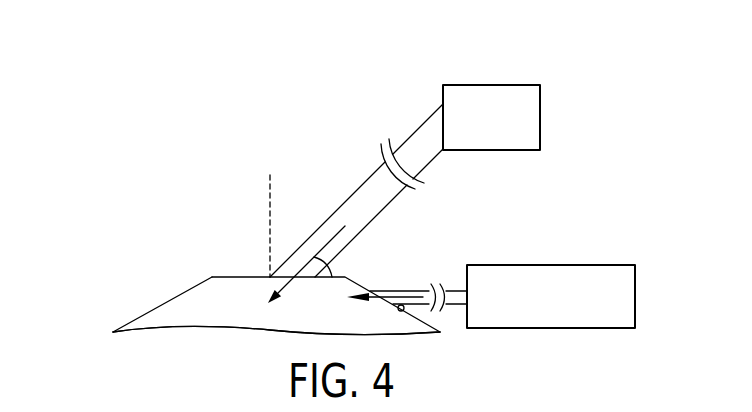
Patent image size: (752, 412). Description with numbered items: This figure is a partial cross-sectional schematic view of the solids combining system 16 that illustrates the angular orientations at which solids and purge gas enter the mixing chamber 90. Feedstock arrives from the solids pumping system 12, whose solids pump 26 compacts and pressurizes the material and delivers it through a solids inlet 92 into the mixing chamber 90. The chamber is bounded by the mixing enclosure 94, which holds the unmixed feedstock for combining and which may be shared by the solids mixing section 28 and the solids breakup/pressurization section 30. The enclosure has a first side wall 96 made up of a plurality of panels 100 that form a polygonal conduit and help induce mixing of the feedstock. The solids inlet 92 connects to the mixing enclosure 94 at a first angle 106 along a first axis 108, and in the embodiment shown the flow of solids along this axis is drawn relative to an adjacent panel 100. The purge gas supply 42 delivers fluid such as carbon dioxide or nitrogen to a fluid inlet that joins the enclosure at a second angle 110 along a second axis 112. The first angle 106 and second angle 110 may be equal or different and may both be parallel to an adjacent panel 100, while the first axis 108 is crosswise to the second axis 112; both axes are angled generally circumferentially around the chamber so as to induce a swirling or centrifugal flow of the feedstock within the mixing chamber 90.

The solids pumping system 12 is at (569, 109).
The solids combining system 16 is at (120, 182).
The solids pump 26 is at (492, 85).
The solids mixing section 28 is at (126, 279).
The solids breakup/pressurization section 30 is at (265, 303).
The purge gas supply 42 is at (552, 265).
The mixing chamber 90 is at (256, 316).
The solids inlet 92 is at (270, 253).
The mixing enclosure 94 is at (172, 299).
The first side wall 96 is at (173, 302).
The panel 100 is at (125, 327).
The first angle 106 is at (334, 275).
The first axis 108 is at (328, 240).
The second angle 110 is at (398, 309).
The second axis 112 is at (418, 290).